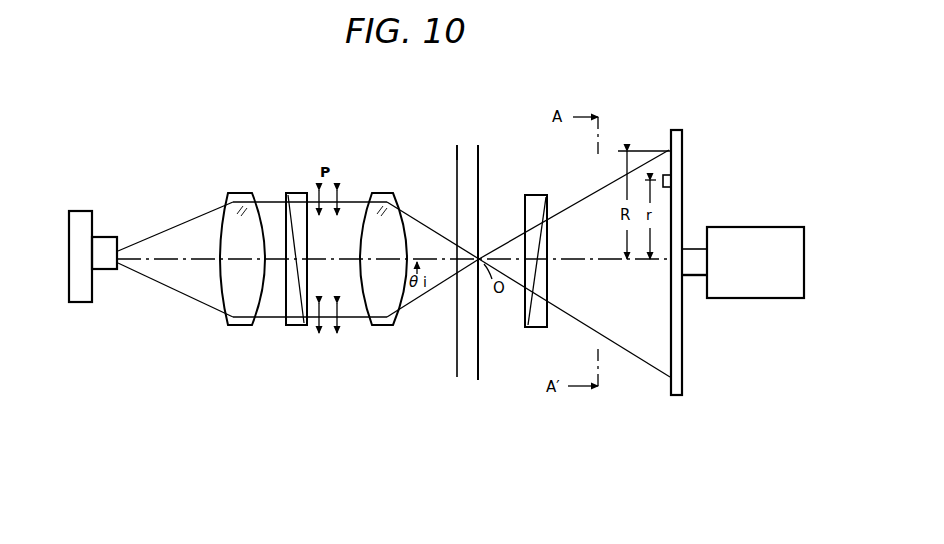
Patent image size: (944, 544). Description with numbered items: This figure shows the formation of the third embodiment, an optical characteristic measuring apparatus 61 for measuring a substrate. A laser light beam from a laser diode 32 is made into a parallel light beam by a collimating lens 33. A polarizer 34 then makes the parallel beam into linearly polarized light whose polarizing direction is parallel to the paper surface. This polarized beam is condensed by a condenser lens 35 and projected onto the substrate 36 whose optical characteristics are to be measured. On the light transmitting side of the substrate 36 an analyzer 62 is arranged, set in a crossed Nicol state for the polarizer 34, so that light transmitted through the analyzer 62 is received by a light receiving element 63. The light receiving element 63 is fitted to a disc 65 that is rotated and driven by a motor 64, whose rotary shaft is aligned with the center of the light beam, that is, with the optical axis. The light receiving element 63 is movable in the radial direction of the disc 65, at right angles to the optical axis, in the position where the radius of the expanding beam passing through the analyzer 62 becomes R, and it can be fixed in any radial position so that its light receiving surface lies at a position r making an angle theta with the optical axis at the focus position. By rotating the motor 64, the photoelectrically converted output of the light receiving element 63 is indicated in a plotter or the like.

The laser diode 32 is at (104, 237).
The collimating lens 33 is at (233, 194).
The polarizer 34 is at (287, 325).
The condenser lens 35 is at (384, 196).
The substrate 36 is at (464, 331).
The optical characteristic measuring apparatus 61 is at (442, 148).
The analyzer 62 is at (527, 197).
The light receiving element 63 is at (671, 180).
The motor 64 is at (748, 227).
The disc 65 is at (671, 136).